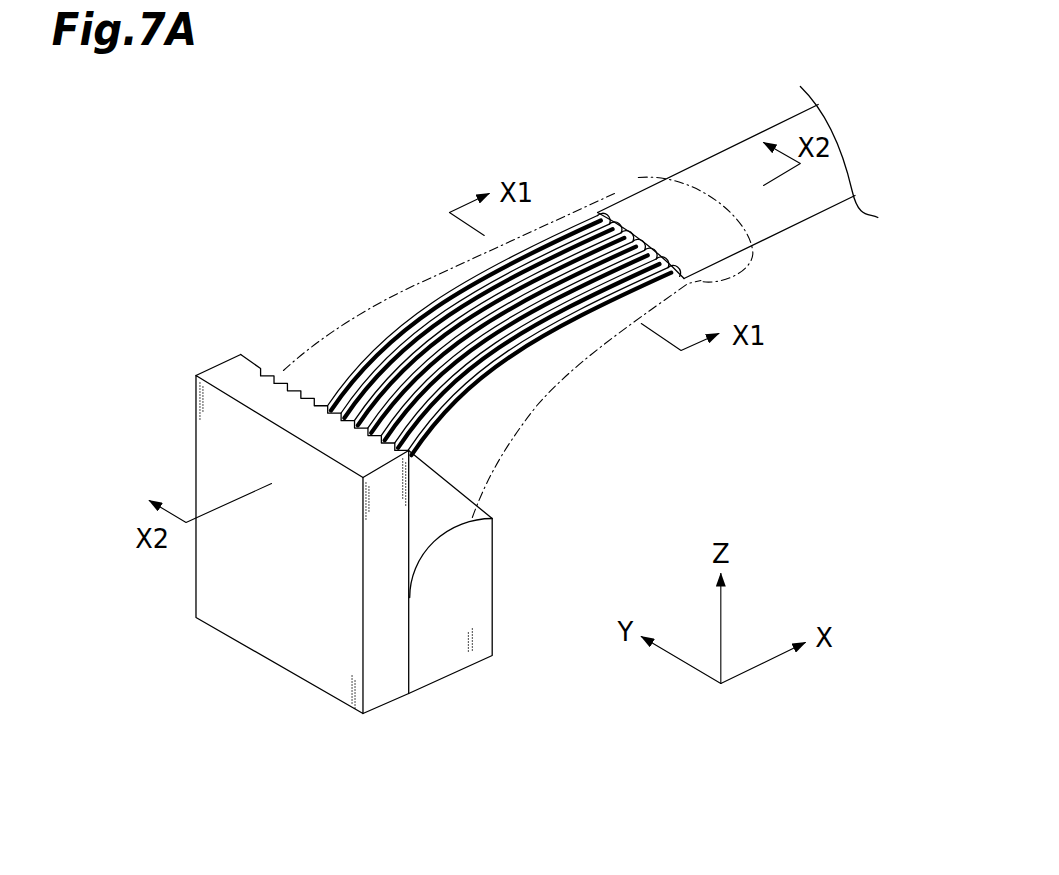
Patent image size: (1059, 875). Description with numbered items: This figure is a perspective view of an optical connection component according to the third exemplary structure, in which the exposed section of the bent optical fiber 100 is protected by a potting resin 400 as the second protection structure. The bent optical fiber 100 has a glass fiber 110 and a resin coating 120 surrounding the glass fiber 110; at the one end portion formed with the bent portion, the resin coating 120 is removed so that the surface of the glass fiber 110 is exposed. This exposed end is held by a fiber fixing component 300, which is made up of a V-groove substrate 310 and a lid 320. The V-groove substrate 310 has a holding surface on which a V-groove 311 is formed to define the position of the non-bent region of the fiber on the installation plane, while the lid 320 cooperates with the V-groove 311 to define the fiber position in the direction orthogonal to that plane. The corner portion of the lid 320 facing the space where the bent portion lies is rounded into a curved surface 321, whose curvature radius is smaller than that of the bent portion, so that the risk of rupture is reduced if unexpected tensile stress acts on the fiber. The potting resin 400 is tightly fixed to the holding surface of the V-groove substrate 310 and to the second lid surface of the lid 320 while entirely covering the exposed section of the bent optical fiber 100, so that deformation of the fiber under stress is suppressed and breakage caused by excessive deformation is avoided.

The bent optical fiber 100 is at (395, 83).
The glass fiber 110 is at (440, 303).
The resin coating 120 is at (605, 208).
The fiber fixing component 300 is at (155, 383).
The V-groove substrate 310 is at (243, 627).
The V-groove 311 is at (257, 368).
The lid 320 is at (482, 606).
The curved surface 321 is at (423, 576).
The potting resin 400 is at (383, 297).